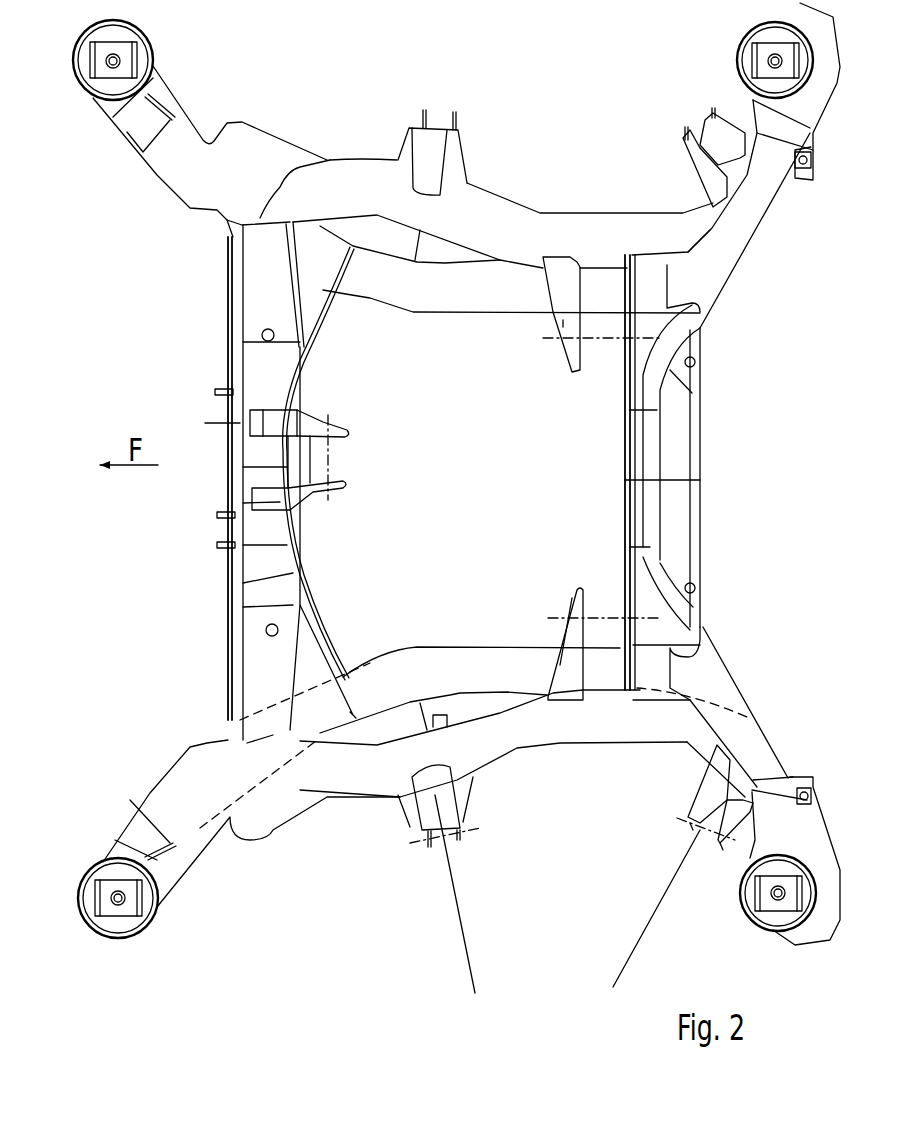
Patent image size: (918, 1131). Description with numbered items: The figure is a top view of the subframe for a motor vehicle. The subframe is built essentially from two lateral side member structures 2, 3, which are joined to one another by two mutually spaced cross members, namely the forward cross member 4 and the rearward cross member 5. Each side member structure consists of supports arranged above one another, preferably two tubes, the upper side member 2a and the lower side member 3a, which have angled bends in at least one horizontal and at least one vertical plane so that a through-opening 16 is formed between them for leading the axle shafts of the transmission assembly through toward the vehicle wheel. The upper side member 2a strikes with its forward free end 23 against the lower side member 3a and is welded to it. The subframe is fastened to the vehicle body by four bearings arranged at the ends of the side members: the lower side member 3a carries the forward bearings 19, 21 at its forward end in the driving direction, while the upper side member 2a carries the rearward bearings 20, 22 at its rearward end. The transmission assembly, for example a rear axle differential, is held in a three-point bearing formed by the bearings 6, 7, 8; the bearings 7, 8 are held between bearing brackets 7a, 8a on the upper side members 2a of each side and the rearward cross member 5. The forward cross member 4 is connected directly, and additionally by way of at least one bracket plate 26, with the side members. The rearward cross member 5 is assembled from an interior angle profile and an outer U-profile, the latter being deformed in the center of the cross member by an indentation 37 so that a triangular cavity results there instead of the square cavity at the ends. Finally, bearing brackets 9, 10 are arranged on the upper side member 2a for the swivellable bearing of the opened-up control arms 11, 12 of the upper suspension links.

The side member structure 2 is at (603, 198).
The upper side member 2a is at (507, 215).
The side member structure 3 is at (511, 483).
The lower side member 3a is at (485, 300).
The forward cross member 4 is at (205, 338).
The rearward cross member 5 is at (707, 583).
The bearing 6 is at (318, 502).
The bearing 7 is at (540, 596).
The bearing bracket 7a is at (557, 660).
The bearing 8 is at (560, 344).
The bearing bracket 8a is at (568, 330).
The bearing bracket 9 is at (390, 138).
The bearing bracket 10 is at (673, 143).
The control arm 11 is at (458, 913).
The control arm 12 is at (643, 933).
The through-opening 16 is at (437, 252).
The forward bearing 19 is at (95, 100).
The rearward bearing 20 is at (740, 70).
The forward bearing 21 is at (107, 877).
The rearward bearing 22 is at (768, 935).
The forward free end 23 is at (290, 800).
The bracket plate 26 is at (242, 820).
The indentation 37 is at (673, 463).